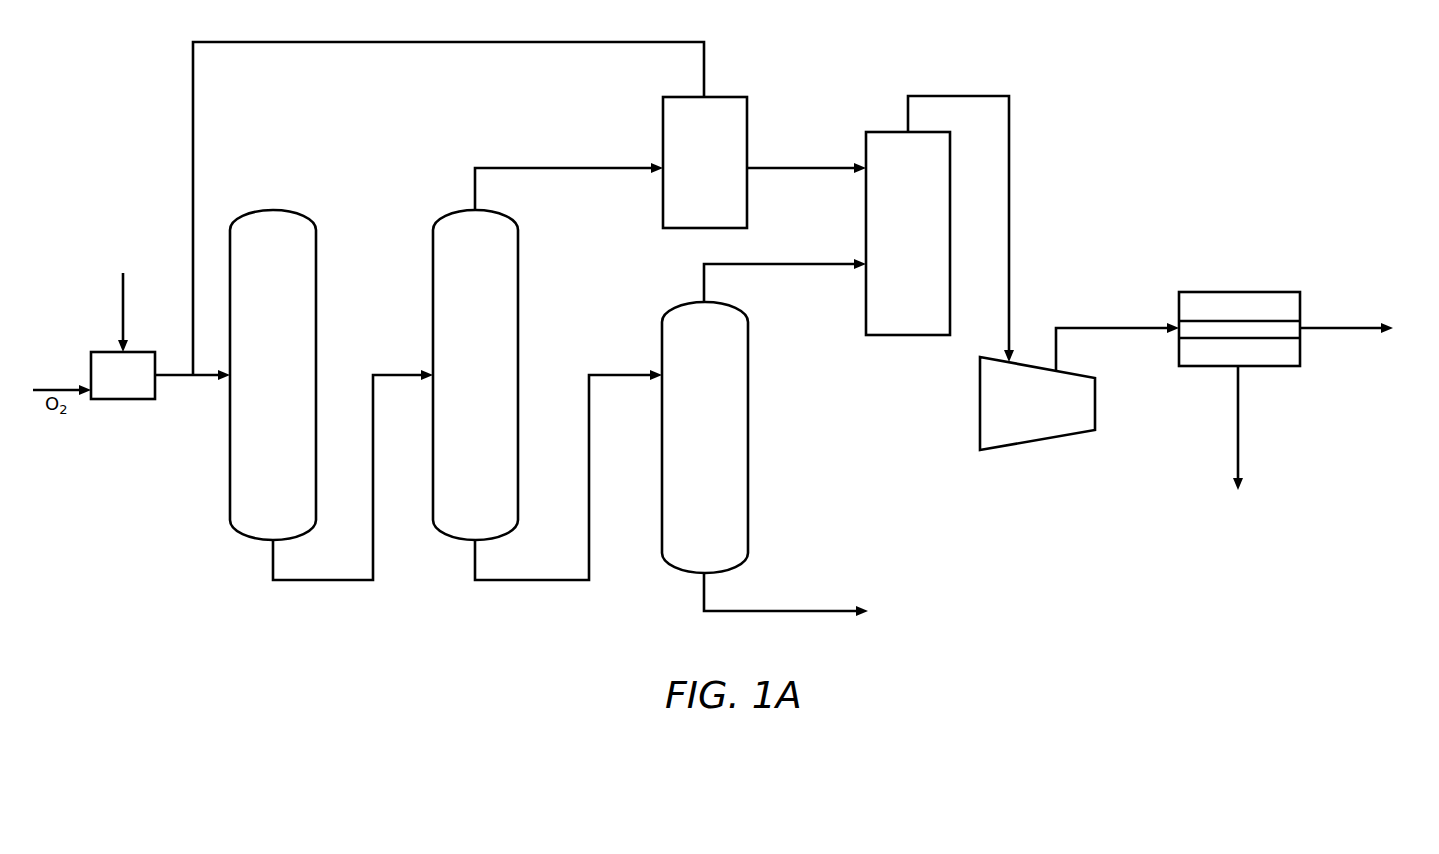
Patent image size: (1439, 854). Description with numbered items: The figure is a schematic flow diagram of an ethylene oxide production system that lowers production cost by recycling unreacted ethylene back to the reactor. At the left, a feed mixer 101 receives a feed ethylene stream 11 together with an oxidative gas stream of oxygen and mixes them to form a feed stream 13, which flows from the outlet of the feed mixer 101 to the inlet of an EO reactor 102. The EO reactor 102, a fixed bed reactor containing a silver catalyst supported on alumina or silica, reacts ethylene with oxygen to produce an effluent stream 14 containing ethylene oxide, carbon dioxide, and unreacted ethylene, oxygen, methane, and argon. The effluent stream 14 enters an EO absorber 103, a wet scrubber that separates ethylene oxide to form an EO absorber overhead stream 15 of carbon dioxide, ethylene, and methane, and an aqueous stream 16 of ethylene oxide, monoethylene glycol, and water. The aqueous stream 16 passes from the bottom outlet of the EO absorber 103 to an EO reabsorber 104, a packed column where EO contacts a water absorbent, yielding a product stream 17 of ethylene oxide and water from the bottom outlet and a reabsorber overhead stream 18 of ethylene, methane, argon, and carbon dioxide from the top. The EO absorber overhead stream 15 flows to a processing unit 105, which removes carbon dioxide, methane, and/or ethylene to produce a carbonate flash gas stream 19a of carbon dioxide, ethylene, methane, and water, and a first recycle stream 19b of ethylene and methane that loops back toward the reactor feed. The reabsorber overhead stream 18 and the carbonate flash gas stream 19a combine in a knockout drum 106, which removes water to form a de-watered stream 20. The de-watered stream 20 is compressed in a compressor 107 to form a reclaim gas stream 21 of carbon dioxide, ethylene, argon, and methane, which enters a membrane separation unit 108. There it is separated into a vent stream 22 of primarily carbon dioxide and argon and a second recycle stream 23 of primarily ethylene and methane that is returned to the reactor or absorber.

The feed ethylene stream 11 is at (125, 290).
The feed stream 13 is at (175, 378).
The effluent stream 14 is at (322, 582).
The EO absorber overhead stream 15 is at (563, 170).
The aqueous stream 16 is at (532, 582).
The product stream 17 is at (770, 613).
The reabsorber overhead stream 18 is at (775, 266).
The carbonate flash gas stream 19a is at (790, 170).
The first recycle stream 19b is at (445, 42).
The de-watered stream 20 is at (1010, 183).
The reclaim gas stream 21 is at (1128, 332).
The vent stream 22 is at (1240, 423).
The second recycle stream 23 is at (1355, 326).
The feed mixer 101 is at (125, 400).
The EO reactor 102 is at (316, 278).
The EO absorber 103 is at (518, 278).
The EO reabsorber 104 is at (748, 392).
The processing unit 105 is at (748, 118).
The knockout drum 106 is at (888, 337).
The compressor 107 is at (980, 418).
The membrane separation unit 108 is at (1192, 368).